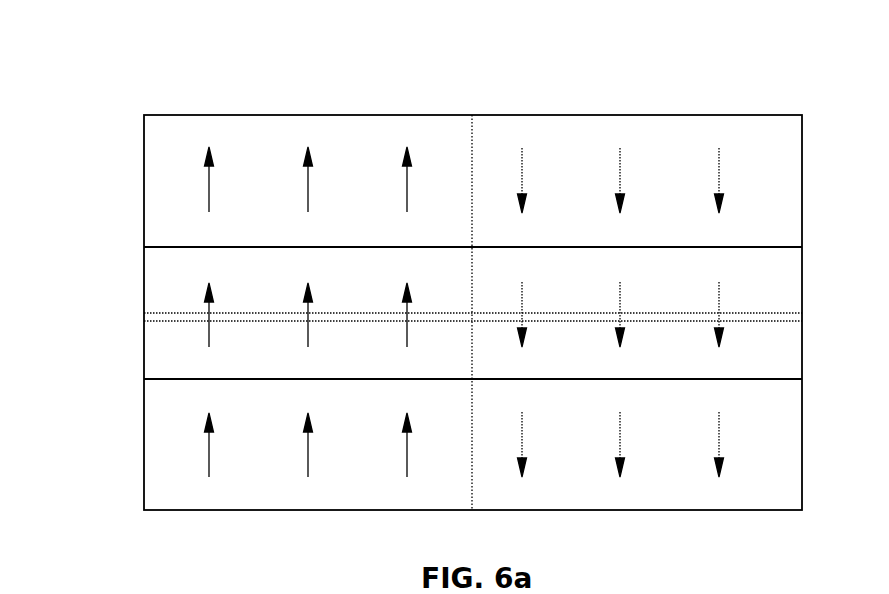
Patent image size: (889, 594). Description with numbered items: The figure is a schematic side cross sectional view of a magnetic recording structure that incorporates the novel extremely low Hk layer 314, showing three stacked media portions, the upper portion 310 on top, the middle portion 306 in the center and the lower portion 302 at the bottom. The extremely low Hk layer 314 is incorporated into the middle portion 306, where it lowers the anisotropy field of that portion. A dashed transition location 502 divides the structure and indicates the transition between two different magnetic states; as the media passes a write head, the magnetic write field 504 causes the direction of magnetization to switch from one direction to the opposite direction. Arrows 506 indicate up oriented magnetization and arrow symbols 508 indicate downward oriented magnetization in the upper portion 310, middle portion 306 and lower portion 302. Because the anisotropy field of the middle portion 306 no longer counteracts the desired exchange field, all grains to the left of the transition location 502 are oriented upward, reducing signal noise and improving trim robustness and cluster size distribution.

The magnetic write field 504 is at (620, 33).
The transition location 502 is at (472, 132).
The extremely low Hk layer 314 is at (790, 321).
The R3 portion 310 is at (144, 186).
The R2 portion 306 is at (144, 309).
The R1 portion 302 is at (144, 449).
The up oriented magnetization arrows 506 is at (211, 185).
The downward oriented magnetization arrow symbols 508 is at (523, 175).